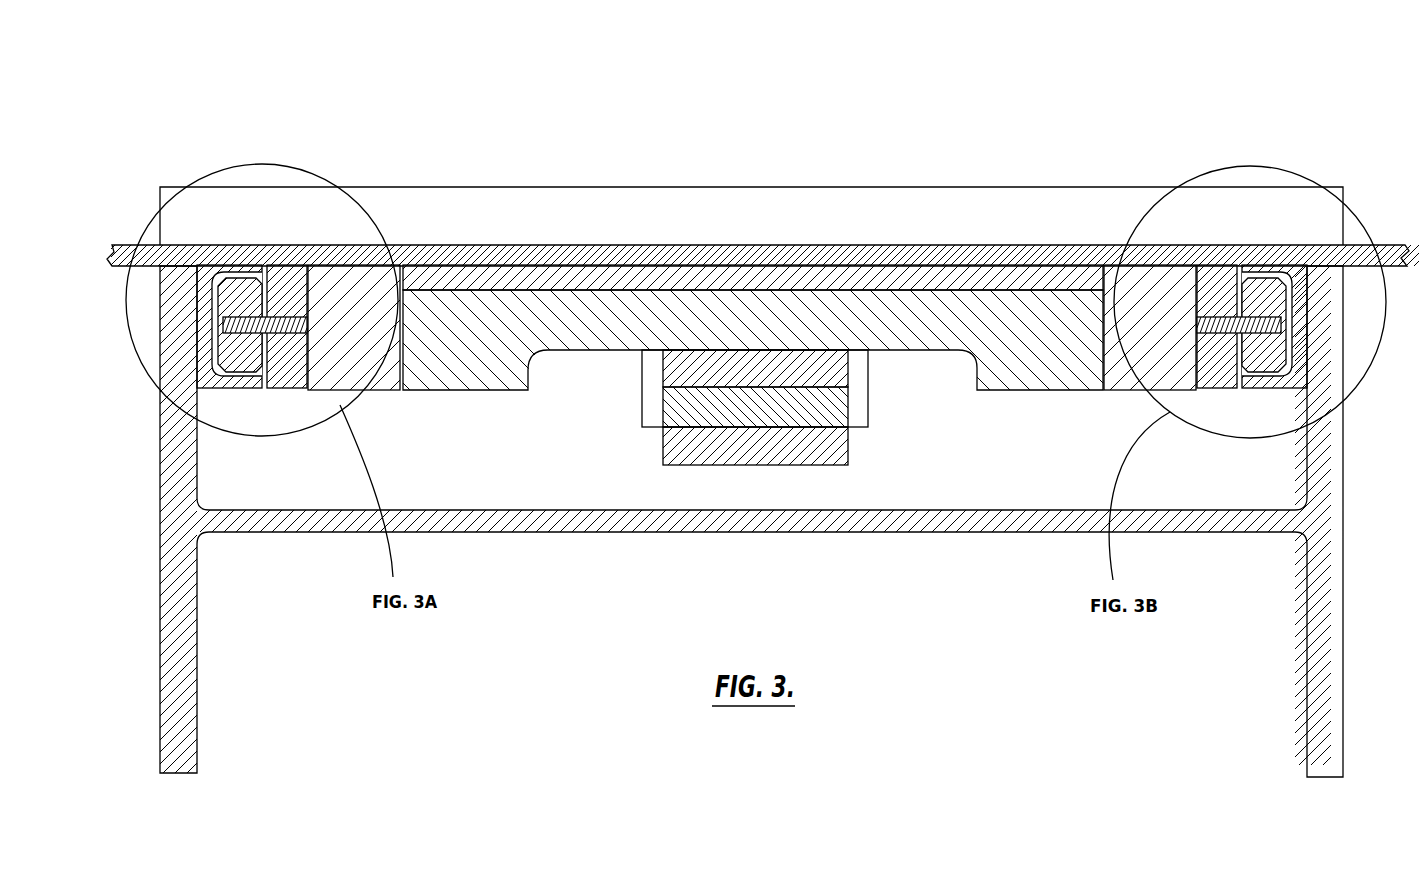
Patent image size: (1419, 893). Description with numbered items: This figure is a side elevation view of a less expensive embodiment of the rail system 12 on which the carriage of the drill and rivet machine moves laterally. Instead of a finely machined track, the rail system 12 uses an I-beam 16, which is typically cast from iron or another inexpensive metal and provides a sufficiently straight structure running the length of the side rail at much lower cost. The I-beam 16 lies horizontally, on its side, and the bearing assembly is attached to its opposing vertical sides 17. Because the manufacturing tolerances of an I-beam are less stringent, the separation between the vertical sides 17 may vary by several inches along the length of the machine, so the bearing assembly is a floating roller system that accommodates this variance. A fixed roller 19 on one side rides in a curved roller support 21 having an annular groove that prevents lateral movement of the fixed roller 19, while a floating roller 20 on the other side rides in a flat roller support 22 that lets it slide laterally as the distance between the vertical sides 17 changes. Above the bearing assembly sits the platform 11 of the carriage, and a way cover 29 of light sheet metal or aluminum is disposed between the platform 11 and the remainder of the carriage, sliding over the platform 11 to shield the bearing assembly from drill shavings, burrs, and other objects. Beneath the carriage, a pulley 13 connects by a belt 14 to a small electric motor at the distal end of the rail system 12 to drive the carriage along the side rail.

The platform 11 is at (587, 250).
The rail system 12 is at (649, 145).
The pulley 13 is at (832, 410).
The belt 14 is at (675, 368).
The I-beam 16 is at (913, 532).
The vertical sides 17 is at (200, 463).
The fixed roller 19 is at (243, 288).
The floating roller 20 is at (1260, 292).
The curved roller support 21 is at (262, 368).
The flat roller support 22 is at (1263, 392).
The way cover 29 is at (734, 213).